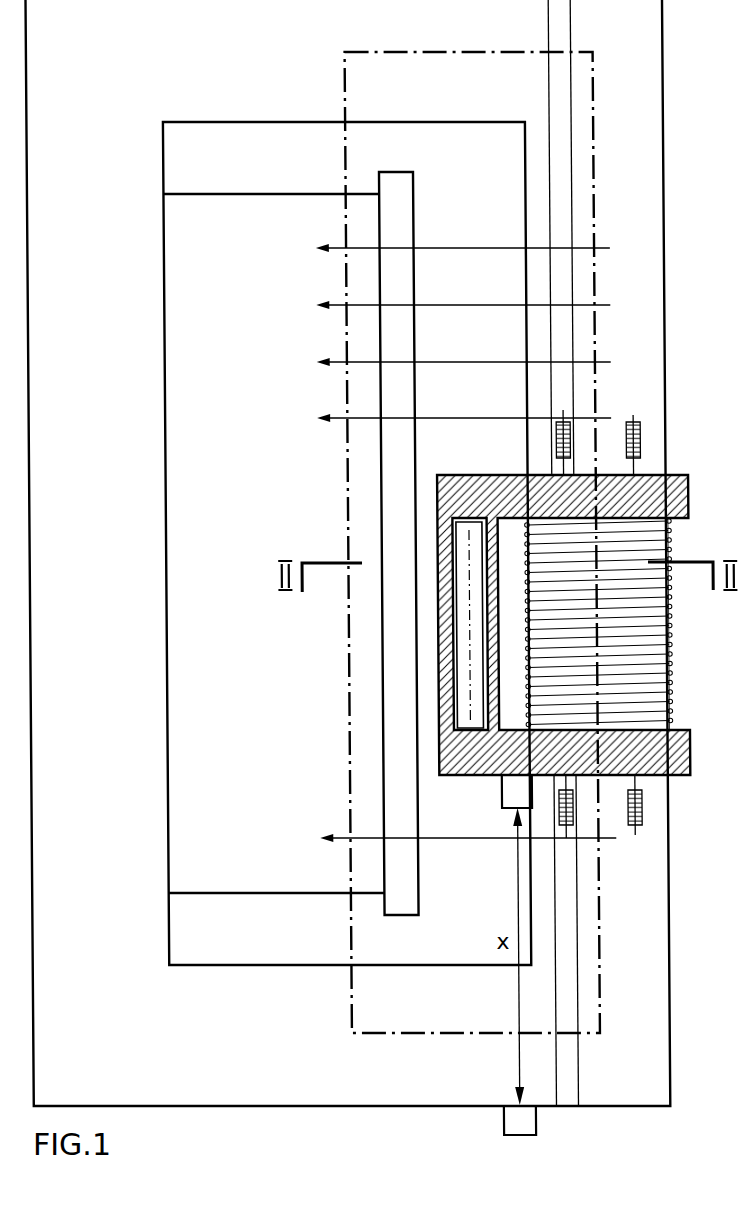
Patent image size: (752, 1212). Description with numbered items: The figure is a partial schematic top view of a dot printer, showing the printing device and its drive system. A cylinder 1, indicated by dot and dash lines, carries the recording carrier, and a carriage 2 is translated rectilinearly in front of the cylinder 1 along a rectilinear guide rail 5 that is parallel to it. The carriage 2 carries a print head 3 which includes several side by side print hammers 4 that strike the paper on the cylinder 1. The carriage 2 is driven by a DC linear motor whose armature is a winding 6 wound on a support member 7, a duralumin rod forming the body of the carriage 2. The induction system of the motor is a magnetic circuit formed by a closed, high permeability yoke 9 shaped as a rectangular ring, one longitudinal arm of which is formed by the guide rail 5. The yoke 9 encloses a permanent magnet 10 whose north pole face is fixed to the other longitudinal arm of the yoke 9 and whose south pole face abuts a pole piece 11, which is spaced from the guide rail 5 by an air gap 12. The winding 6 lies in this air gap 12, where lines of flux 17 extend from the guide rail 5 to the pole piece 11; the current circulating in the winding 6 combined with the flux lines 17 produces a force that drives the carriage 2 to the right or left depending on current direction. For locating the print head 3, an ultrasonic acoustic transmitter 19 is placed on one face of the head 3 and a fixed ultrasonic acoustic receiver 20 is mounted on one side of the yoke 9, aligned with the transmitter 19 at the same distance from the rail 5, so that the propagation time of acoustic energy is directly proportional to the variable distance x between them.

The cylinder 1 is at (345, 52).
The carriage 2 is at (686, 776).
The print head 3 is at (510, 563).
The print hammers 4 is at (466, 606).
The guide rail 5 is at (662, 1020).
The winding 6 is at (668, 652).
The support member 7 is at (668, 688).
The yoke 9 is at (292, 0).
The permanent magnet 10 is at (248, 430).
The pole piece 11 is at (412, 876).
The air gap 12 is at (455, 285).
The lines of flux 17 is at (467, 246).
The ultrasonic acoustic transmitter 19 is at (494, 793).
The ultrasonic acoustic receiver 20 is at (495, 1121).